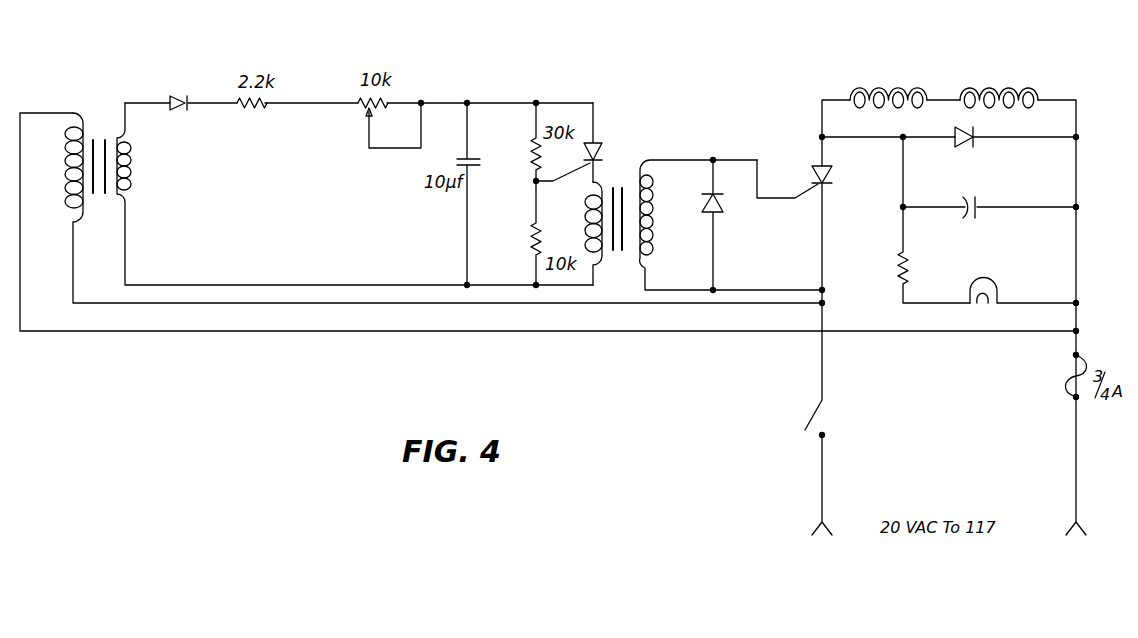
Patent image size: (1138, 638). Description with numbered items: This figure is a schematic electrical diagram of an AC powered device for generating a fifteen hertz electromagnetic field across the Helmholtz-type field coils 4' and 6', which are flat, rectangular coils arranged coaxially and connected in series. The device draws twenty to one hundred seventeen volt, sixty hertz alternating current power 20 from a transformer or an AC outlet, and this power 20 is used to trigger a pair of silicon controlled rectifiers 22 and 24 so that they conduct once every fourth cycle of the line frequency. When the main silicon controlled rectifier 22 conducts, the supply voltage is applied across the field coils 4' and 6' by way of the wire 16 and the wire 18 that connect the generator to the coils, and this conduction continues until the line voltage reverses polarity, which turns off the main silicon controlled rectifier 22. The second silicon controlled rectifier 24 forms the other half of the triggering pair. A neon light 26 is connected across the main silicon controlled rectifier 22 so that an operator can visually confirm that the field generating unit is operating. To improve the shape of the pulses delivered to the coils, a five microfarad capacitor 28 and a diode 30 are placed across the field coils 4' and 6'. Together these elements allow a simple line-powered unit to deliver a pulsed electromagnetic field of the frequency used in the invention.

The wire 16 is at (832, 100).
The wire 18 is at (1062, 100).
The power 20 is at (828, 470).
The main silicon controlled rectifier 22 is at (813, 170).
The silicon controlled rectifier 24 is at (596, 141).
The neon light 26 is at (990, 284).
The capacitor 28 is at (985, 201).
The diode 30 is at (964, 142).
The field coil 4' is at (888, 76).
The field coil 6' is at (999, 76).